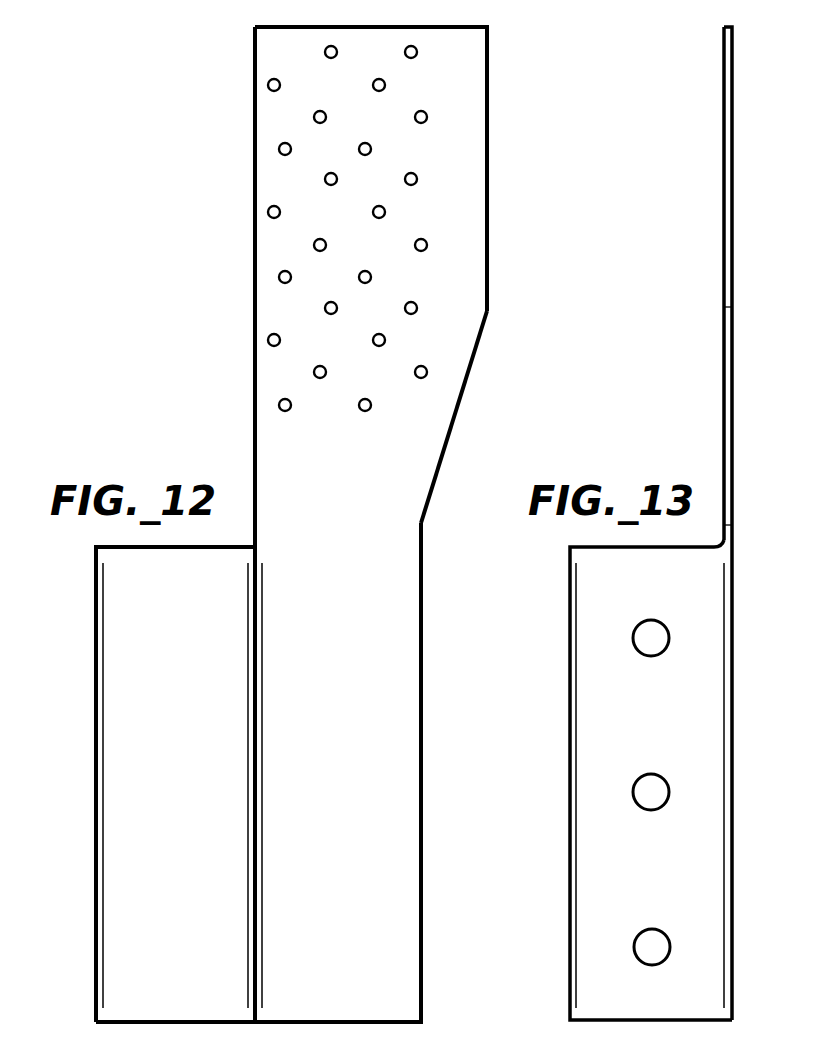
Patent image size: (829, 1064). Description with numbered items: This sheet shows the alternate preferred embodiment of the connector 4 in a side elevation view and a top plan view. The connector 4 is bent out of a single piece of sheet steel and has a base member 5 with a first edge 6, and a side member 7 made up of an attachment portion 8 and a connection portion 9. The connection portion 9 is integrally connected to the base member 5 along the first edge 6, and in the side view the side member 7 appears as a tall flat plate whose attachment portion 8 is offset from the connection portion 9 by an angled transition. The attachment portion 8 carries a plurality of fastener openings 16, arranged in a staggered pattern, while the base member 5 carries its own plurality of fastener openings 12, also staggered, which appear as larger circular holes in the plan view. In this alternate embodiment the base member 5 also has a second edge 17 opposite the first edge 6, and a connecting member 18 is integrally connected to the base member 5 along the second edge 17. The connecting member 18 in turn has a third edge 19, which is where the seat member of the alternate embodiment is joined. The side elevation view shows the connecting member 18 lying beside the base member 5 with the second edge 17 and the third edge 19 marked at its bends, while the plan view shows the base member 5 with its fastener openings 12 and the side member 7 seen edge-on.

In FIG. 12, the connector 4 is at (218, 392).
In FIG. 13, the connector 4 is at (680, 426).
In FIG. 13, the base member 5 is at (612, 1010).
In FIG. 13, the first edge 6 is at (735, 838).
In FIG. 12, the side member 7 is at (448, 460).
In FIG. 13, the side member 7 is at (736, 424).
In FIG. 12, the attachment portion 8 is at (488, 200).
In FIG. 13, the attachment portion 8 is at (733, 255).
In FIG. 12, the connection portion 9 is at (423, 838).
In FIG. 13, the fastener openings 12 is at (632, 638).
In FIG. 12, the fastener openings 16 is at (385, 85).
In FIG. 12, the second edge 17 is at (257, 968).
In FIG. 13, the second edge 17 is at (568, 697).
In FIG. 12, the connecting member 18 is at (183, 1010).
In FIG. 12, the third edge 19 is at (96, 712).